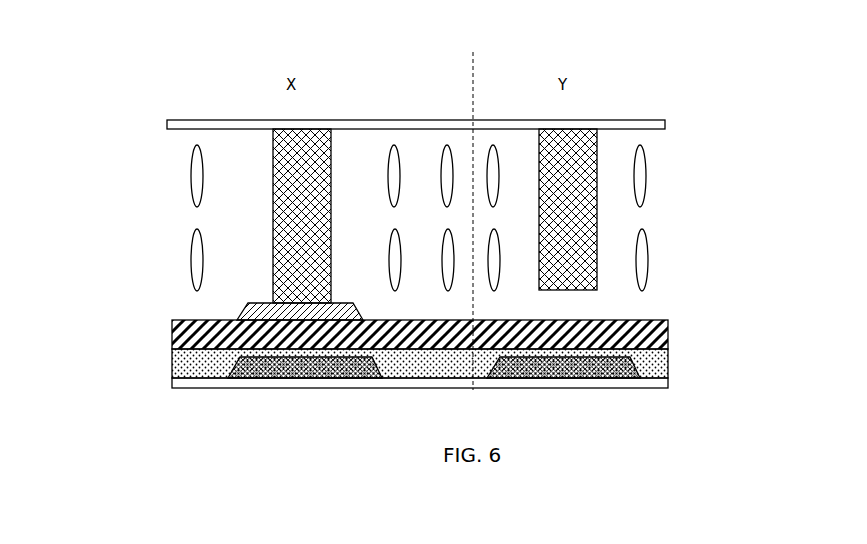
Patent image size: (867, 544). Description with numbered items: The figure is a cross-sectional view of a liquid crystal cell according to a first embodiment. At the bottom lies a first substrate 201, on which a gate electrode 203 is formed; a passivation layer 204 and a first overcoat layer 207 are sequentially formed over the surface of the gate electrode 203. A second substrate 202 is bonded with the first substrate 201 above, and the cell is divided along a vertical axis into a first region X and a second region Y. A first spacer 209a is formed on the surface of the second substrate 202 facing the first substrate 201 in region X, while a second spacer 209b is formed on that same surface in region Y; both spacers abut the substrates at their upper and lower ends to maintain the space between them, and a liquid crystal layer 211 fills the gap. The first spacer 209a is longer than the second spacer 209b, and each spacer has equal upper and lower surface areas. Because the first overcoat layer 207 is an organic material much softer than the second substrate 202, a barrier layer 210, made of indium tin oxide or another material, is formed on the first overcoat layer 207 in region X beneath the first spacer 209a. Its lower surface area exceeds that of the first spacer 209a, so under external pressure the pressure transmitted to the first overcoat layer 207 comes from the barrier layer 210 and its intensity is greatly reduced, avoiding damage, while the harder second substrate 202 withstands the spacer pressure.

The first substrate 201 is at (633, 380).
The second substrate 202 is at (635, 120).
The gate electrode 203 is at (258, 378).
The passivation layer 204 is at (175, 370).
The first overcoat layer 207 is at (668, 342).
The first spacer 209a is at (288, 243).
The second spacer 209b is at (587, 243).
The barrier layer 210 is at (285, 305).
The liquid crystal layer 211 is at (647, 183).